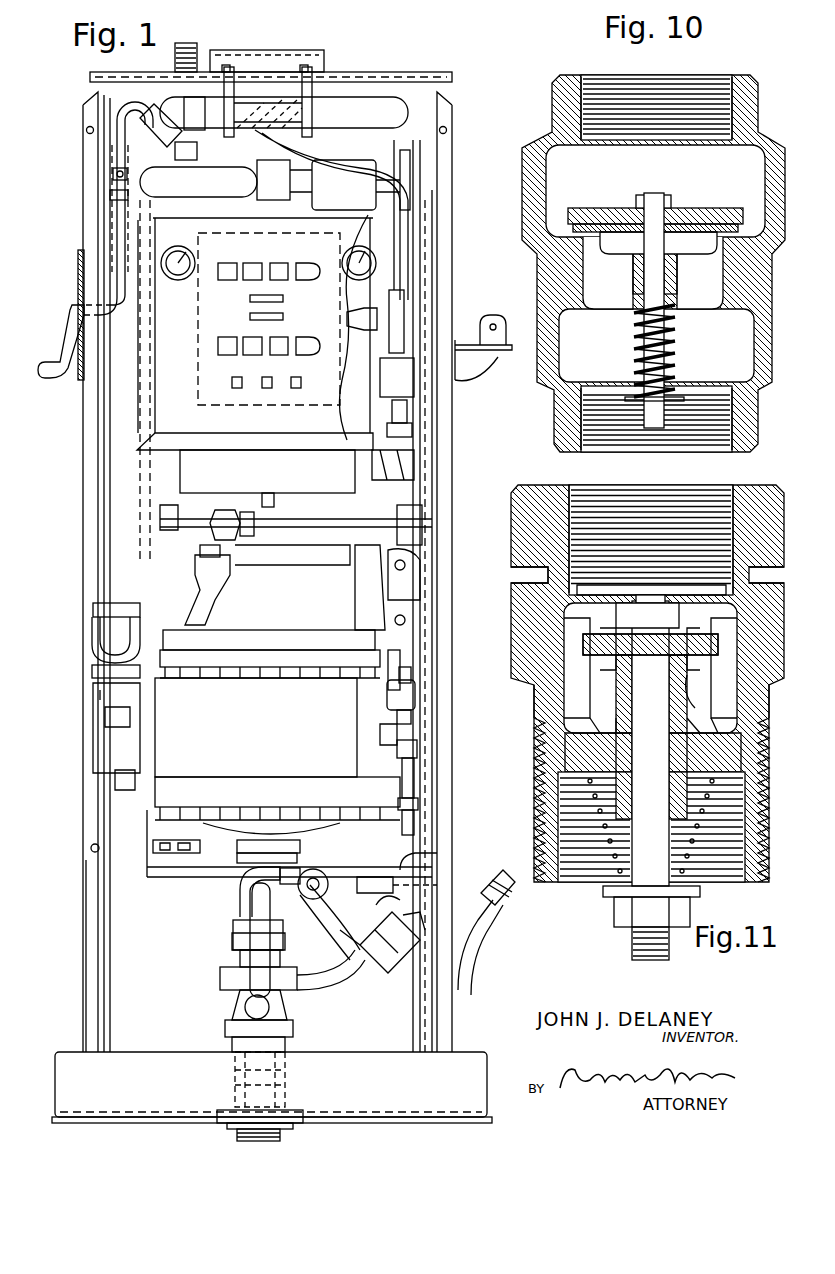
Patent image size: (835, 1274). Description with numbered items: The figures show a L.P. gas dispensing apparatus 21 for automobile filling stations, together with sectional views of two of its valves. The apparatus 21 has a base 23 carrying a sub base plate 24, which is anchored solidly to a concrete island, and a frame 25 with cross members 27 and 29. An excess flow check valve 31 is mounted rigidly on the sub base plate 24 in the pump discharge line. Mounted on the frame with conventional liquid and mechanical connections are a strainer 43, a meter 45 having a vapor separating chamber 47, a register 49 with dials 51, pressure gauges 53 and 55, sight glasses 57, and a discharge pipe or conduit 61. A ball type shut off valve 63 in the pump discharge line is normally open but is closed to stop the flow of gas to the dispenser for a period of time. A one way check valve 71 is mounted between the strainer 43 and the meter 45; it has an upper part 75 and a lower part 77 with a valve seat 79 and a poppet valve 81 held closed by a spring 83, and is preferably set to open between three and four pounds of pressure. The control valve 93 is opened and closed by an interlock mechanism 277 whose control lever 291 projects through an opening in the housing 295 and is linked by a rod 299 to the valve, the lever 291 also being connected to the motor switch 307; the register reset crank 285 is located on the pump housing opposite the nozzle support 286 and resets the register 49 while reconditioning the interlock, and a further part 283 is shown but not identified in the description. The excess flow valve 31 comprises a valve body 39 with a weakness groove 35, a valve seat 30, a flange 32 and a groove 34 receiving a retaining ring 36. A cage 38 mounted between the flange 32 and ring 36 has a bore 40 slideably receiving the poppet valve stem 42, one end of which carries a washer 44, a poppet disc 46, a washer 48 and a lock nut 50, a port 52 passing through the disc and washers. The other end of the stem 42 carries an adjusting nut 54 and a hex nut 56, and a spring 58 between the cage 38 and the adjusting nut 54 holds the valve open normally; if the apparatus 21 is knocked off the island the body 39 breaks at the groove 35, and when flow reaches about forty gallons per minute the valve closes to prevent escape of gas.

In FIG. 1, the dispensing apparatus 21 is at (78, 471).
In FIG. 1, the base 23 is at (418, 1112).
In FIG. 1, the sub base plate 24 is at (300, 1128).
In FIG. 1, the frame 25 is at (110, 937).
In FIG. 1, the cross member 27 is at (124, 838).
In FIG. 1, the cross member 29 is at (90, 73).
In FIG. 1, the excess flow check valve 31 is at (290, 1100).
In FIG. 11, the excess flow check valve 31 is at (509, 501).
In FIG. 1, the strainer 43 is at (332, 920).
In FIG. 1, the meter 45 is at (272, 739).
In FIG. 1, the vapor separating chamber 47 is at (210, 597).
In FIG. 1, the register 49 is at (298, 487).
In FIG. 1, the dials 51 is at (250, 333).
In FIG. 1, the pressure gauge 53 is at (196, 258).
In FIG. 1, the pressure gauge 55 is at (341, 258).
In FIG. 1, the sight glasses 57 is at (253, 131).
In FIG. 1, the discharge pipe or conduit 61 is at (415, 968).
In FIG. 1, the ball type shut off valve 63 is at (287, 1014).
In FIG. 1, the one way check valve 71 is at (387, 705).
In FIG. 10, the one way check valve 71 is at (545, 120).
In FIG. 1, the control valve 93 is at (367, 205).
In FIG. 1, the interlock mechanism 277 is at (384, 330).
In FIG. 1, the nozzle fitting 283 is at (350, 312).
In FIG. 1, the register reset crank 285 is at (66, 383).
In FIG. 1, the nozzle support 286 is at (512, 300).
In FIG. 1, the control lever 291 is at (462, 340).
In FIG. 1, the housing 295 is at (78, 260).
In FIG. 1, the rod 299 is at (405, 275).
In FIG. 1, the motor switch 307 is at (407, 470).
In FIG. 10, the upper part 75 is at (522, 186).
In FIG. 10, the lower part 77 is at (537, 376).
In FIG. 10, the valve seat 79 is at (592, 245).
In FIG. 10, the poppet valve 81 is at (719, 210).
In FIG. 10, the spring 83 is at (677, 355).
In FIG. 11, the valve seat 30 is at (594, 606).
In FIG. 11, the flange 32 is at (721, 730).
In FIG. 11, the groove 34 is at (741, 768).
In FIG. 11, the weakness groove 35 is at (530, 575).
In FIG. 11, the retaining ring 36 is at (568, 764).
In FIG. 11, the cage 38 is at (599, 730).
In FIG. 11, the valve body 39 is at (534, 692).
In FIG. 11, the bore 40 is at (663, 729).
In FIG. 11, the poppet valve stem 42 is at (632, 941).
In FIG. 11, the washer 44 is at (705, 691).
In FIG. 11, the poppet disc 46 is at (698, 657).
In FIG. 11, the washer 48 is at (710, 640).
In FIG. 11, the lock nut 50 is at (672, 610).
In FIG. 11, the port 52 is at (612, 658).
In FIG. 11, the adjusting nut 54 is at (702, 893).
In FIG. 11, the hex nut 56 is at (614, 912).
In FIG. 11, the spring 58 is at (622, 798).